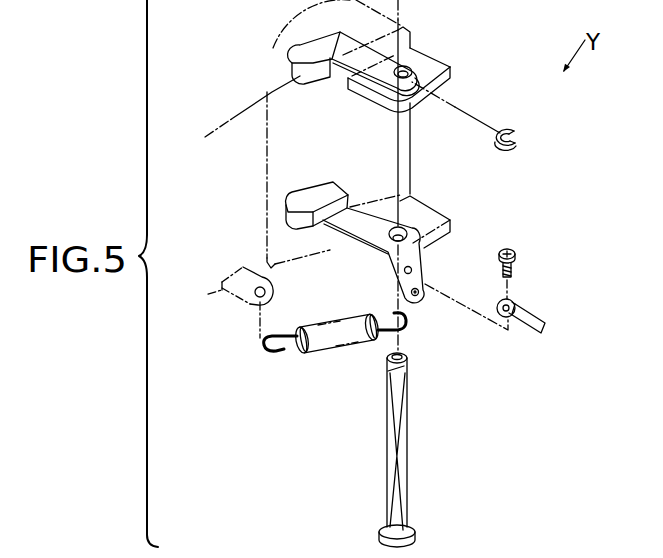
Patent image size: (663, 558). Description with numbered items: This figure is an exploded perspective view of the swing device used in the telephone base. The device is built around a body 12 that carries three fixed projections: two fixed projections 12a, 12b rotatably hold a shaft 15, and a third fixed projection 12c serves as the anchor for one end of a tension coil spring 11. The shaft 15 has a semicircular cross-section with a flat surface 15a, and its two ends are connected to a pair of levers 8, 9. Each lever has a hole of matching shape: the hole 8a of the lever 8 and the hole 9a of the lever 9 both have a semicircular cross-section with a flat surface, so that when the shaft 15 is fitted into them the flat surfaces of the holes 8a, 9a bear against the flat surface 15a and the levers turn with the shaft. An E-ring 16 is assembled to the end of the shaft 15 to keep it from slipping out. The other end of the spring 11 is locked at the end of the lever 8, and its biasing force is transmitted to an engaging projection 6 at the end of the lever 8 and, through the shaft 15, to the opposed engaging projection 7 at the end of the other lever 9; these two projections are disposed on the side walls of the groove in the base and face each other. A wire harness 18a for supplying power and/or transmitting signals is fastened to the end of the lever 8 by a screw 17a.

The engaging projection 6 is at (323, 196).
The engaging projection 7 is at (290, 70).
The lever 8 is at (377, 222).
The hole 8a is at (389, 229).
The lever 9 is at (399, 55).
The hole 9a is at (428, 72).
The tension coil spring 11 is at (308, 357).
The body 12 is at (238, 215).
The fixed projection 12a is at (448, 213).
The fixed projection 12b is at (452, 80).
The fixed projection 12c is at (248, 304).
The shaft 15 is at (423, 450).
The flat surface 15a is at (393, 458).
The E-ring 16 is at (518, 137).
The screw 17a is at (516, 253).
The wire harness 18a is at (543, 315).